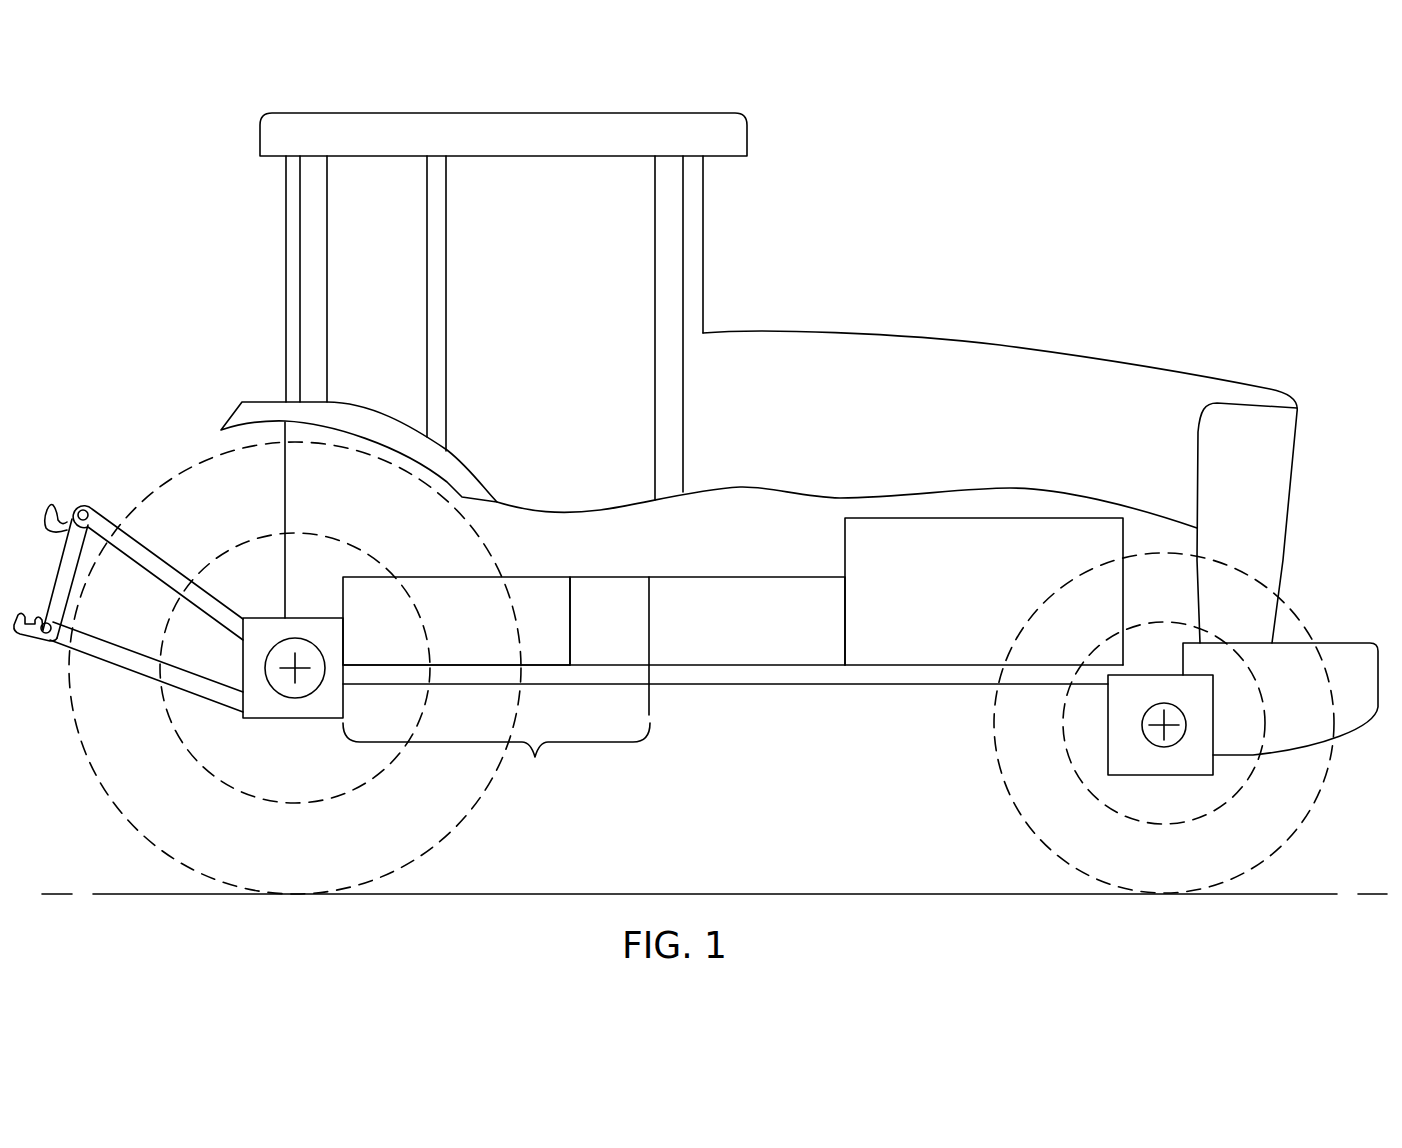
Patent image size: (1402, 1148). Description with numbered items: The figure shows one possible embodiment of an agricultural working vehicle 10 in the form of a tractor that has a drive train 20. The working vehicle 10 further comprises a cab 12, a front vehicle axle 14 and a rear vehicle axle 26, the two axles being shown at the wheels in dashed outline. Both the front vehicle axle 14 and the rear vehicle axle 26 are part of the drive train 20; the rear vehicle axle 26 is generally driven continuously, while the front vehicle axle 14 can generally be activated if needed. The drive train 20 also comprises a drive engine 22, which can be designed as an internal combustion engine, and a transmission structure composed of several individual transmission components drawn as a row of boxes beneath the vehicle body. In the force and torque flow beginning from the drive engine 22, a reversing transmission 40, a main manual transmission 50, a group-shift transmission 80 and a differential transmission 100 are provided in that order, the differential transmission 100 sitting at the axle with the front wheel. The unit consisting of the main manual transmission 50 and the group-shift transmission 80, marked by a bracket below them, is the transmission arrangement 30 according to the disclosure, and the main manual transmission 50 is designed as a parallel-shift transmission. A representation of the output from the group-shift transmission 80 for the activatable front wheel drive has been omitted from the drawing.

The agricultural working vehicle 10 is at (1035, 105).
The cab 12 is at (602, 145).
The front vehicle axle 14 is at (1166, 727).
The drive train 20 is at (738, 450).
The drive engine 22 is at (969, 606).
The rear vehicle axle 26 is at (287, 660).
The transmission arrangement 30 is at (496, 685).
The reversing transmission 40 is at (731, 636).
The main manual transmission 50 is at (592, 636).
The group-shift transmission 80 is at (442, 636).
The differential transmission 100 is at (310, 620).